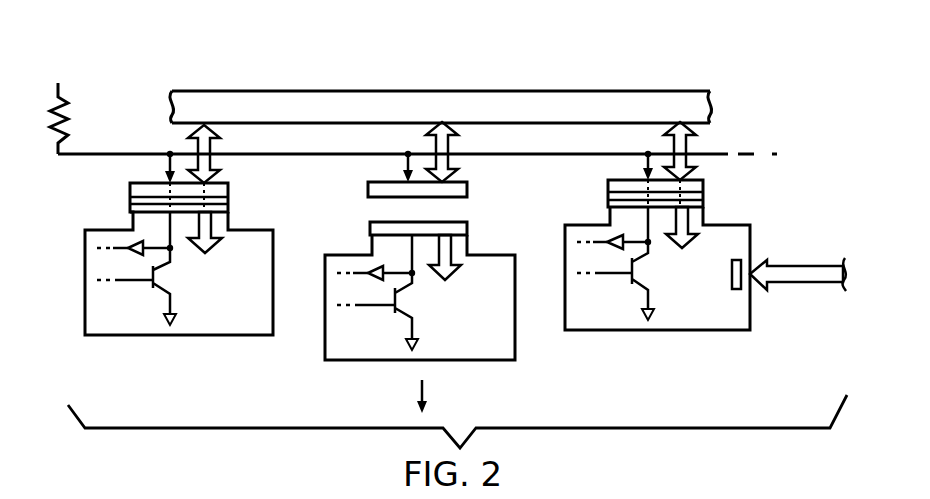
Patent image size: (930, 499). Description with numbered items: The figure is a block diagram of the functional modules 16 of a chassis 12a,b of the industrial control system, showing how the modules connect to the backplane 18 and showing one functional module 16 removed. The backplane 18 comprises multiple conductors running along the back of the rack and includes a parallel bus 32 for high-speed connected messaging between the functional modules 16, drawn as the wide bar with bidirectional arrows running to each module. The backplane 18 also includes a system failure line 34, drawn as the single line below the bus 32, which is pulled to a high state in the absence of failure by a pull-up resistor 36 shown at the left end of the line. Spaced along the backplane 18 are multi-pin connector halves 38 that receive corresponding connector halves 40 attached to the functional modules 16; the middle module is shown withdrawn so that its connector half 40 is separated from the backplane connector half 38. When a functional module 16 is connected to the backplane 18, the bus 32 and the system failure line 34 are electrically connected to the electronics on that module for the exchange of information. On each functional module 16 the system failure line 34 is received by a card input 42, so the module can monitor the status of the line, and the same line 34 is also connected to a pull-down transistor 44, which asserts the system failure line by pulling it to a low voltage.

The primary and secondary chassis 12a,b is at (320, 73).
The functional module 16 is at (133, 337).
The backplane 18 is at (508, 73).
The parallel bus 32 is at (582, 97).
The system failure line 34 is at (302, 153).
The pull-up resistor 36 is at (59, 86).
The multi-pin connector half 38 is at (229, 189).
The connector half 40 is at (229, 209).
The card input 42 is at (132, 245).
The pull-down transistor 44 is at (153, 286).